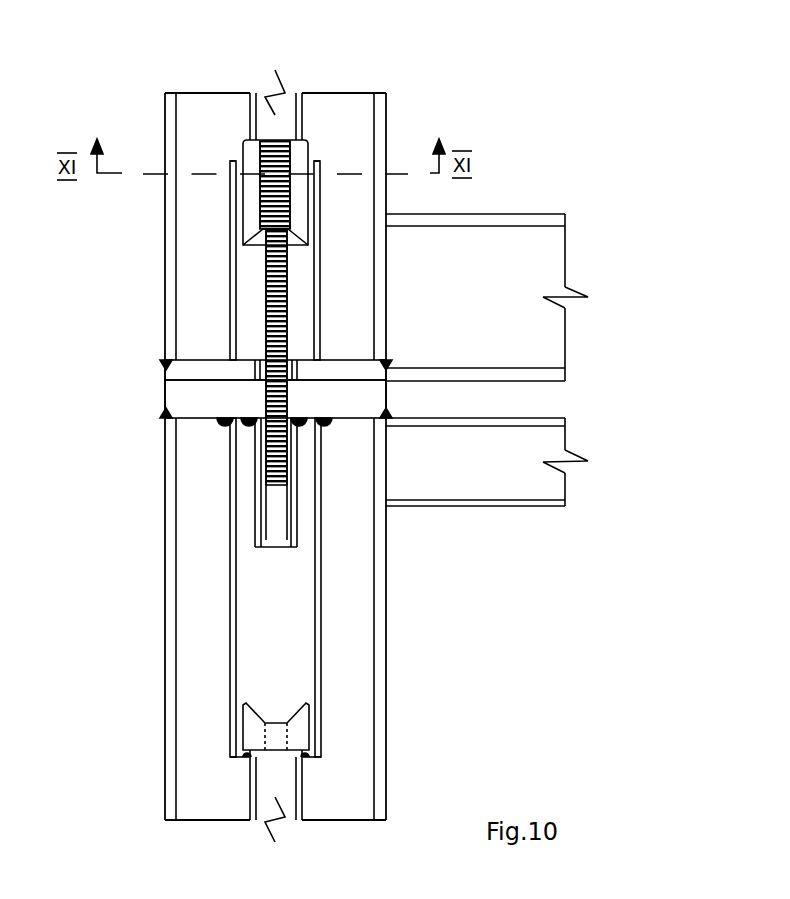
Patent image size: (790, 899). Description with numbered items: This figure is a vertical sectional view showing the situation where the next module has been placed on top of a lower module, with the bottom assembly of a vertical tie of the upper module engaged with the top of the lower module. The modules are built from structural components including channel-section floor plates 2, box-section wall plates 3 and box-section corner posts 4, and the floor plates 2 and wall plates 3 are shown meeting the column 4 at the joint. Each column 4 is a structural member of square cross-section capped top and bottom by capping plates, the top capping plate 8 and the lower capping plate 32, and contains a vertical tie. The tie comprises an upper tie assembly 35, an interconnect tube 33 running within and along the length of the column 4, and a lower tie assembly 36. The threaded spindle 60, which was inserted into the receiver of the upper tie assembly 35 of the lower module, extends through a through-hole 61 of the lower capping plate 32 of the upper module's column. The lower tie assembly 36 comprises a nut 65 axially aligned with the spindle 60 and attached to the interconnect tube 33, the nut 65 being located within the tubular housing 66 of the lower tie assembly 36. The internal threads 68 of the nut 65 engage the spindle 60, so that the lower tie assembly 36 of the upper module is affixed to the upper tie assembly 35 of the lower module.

The channel-section floor plate 2 is at (536, 214).
The box-section wall plate 3 is at (480, 507).
The box-section corner post 4 is at (113, 705).
The post top capping plate 8 is at (386, 412).
The lower capping plate 32 is at (386, 360).
The interconnect tube 33 is at (302, 108).
The upper tie assembly 35 is at (201, 552).
The lower tie assembly 36 is at (201, 220).
The threaded spindle 60 is at (268, 316).
The through-hole 61 is at (262, 372).
The nut 65 is at (312, 158).
The tubular housing 66 is at (230, 272).
The internal threads 68 is at (262, 158).